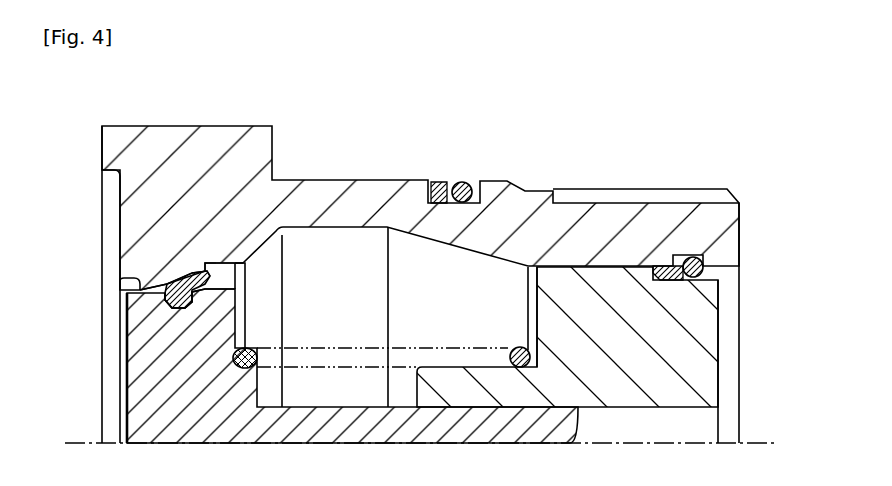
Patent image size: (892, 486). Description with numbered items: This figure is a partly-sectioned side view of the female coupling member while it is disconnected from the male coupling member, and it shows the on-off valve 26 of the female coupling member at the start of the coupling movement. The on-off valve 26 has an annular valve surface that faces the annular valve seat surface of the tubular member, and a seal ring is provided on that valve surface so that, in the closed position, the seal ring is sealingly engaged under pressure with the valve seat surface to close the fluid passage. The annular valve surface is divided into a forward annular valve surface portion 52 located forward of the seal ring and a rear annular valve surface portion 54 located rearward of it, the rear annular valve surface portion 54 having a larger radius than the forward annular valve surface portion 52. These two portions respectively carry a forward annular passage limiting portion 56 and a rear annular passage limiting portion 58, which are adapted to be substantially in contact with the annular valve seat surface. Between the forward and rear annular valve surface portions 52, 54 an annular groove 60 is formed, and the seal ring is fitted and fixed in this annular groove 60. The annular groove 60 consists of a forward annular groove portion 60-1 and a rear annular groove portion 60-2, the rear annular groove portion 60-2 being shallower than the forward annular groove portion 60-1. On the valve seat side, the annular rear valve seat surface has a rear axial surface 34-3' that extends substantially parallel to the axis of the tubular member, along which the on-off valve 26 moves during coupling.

The on-off valve 26 is at (127, 400).
The rear axial surface 34-3' is at (385, 317).
The forward annular valve surface portion 52 is at (165, 283).
The rear annular valve surface portion 54 is at (218, 266).
The forward annular passage limiting portion 56 is at (120, 280).
The rear annular passage limiting portion 58 is at (224, 266).
The annular groove 60 is at (172, 318).
The forward annular groove portion 60-1 is at (178, 275).
The rear annular groove portion 60-2 is at (200, 271).